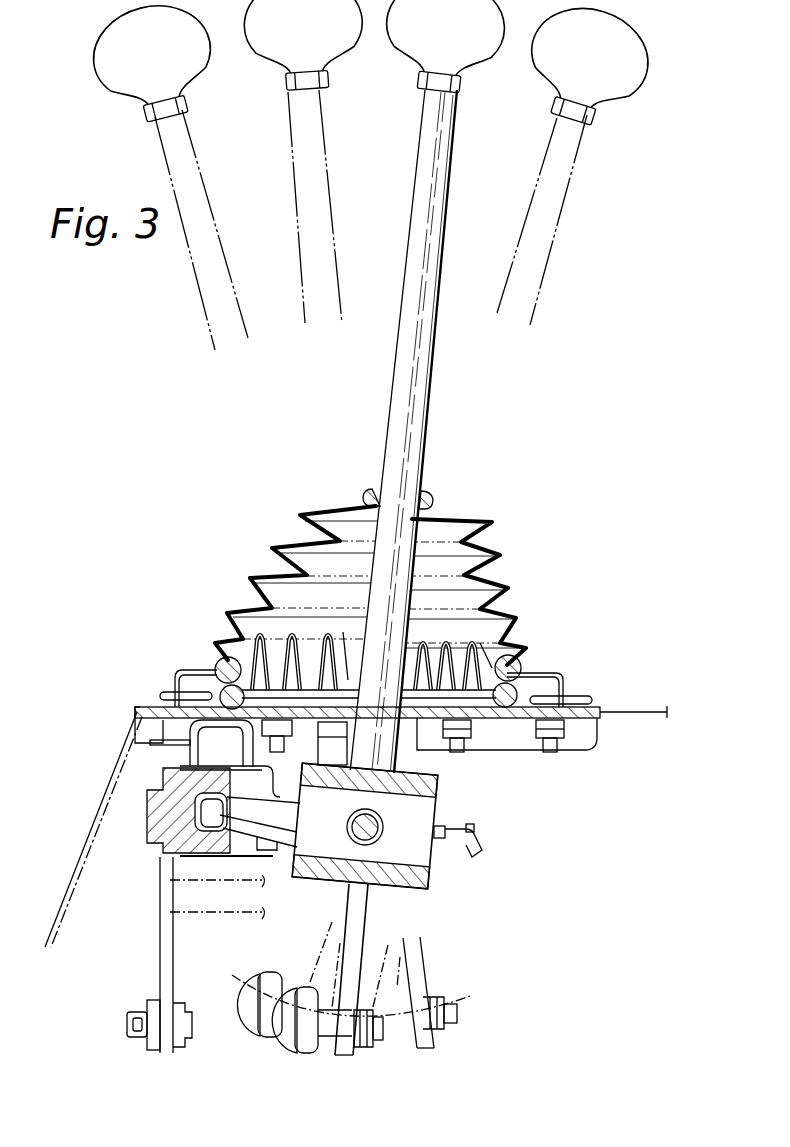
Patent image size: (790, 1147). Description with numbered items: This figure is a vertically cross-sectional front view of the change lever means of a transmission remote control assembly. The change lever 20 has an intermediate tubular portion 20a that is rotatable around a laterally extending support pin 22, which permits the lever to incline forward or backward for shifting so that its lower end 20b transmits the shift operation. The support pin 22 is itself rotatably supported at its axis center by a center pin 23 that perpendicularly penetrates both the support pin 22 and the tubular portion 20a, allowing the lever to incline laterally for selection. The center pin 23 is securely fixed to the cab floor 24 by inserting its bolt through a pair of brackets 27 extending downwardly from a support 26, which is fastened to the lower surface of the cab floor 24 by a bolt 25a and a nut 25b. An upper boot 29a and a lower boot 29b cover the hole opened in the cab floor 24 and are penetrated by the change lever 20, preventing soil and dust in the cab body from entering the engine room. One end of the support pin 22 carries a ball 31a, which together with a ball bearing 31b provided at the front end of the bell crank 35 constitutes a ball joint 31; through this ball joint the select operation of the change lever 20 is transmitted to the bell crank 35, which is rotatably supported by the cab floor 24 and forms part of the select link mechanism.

The change lever 20 is at (414, 165).
The intermediate tubular portion 20a is at (439, 788).
The lower end 20b is at (368, 917).
The support pin 22 is at (423, 853).
The center pin 23 is at (380, 833).
The cab floor 24 is at (622, 708).
The bolt 25a is at (159, 700).
The nut 25b is at (168, 740).
The support 26 is at (138, 711).
The brackets 27 is at (425, 760).
The upper boot 29a is at (272, 543).
The lower boot 29b is at (242, 608).
The ball joint 31 is at (205, 858).
The ball 31a is at (218, 818).
The ball bearing 31b is at (146, 807).
The bell crank 35 is at (159, 951).